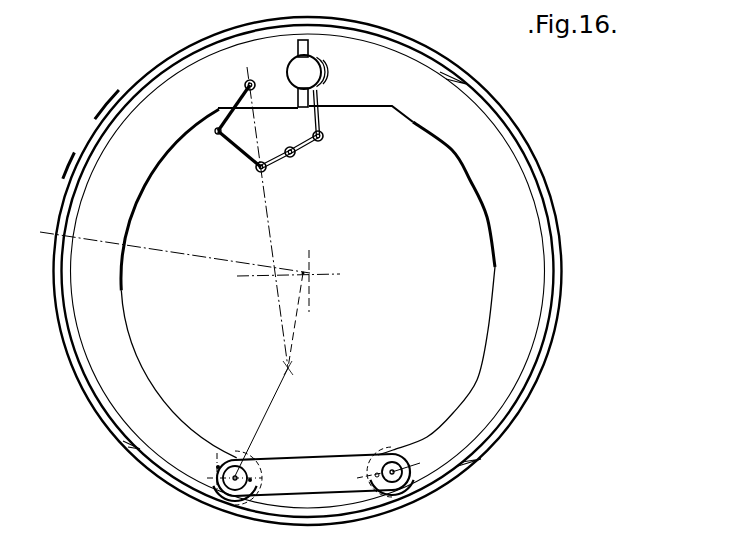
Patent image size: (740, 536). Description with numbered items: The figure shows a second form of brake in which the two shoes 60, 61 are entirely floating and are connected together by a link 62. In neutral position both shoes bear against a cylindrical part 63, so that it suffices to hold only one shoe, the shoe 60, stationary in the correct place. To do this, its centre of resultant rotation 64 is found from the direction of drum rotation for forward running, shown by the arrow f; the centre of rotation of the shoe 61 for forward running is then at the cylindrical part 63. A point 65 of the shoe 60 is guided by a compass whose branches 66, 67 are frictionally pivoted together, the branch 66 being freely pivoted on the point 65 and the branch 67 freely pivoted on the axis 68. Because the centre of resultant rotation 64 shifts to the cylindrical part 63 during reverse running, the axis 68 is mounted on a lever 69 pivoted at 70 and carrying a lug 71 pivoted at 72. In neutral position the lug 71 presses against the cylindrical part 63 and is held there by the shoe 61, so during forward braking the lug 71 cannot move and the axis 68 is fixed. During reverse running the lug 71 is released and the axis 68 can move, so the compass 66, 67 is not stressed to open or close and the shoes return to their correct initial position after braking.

The arrow f is at (78, 146).
The shoe 60 is at (110, 222).
The shoe 61 is at (481, 170).
The link 62 is at (307, 458).
The cylindrical part 63 is at (310, 73).
The centre of resultant rotation 64 is at (290, 368).
The point of the shoe 65 is at (246, 80).
The branch 66 is at (233, 105).
The branch 67 is at (235, 152).
The axis 68 is at (267, 173).
The lever 69 is at (306, 145).
The pivot 70 is at (290, 147).
The lug 71 is at (319, 110).
The pivot 72 is at (325, 134).